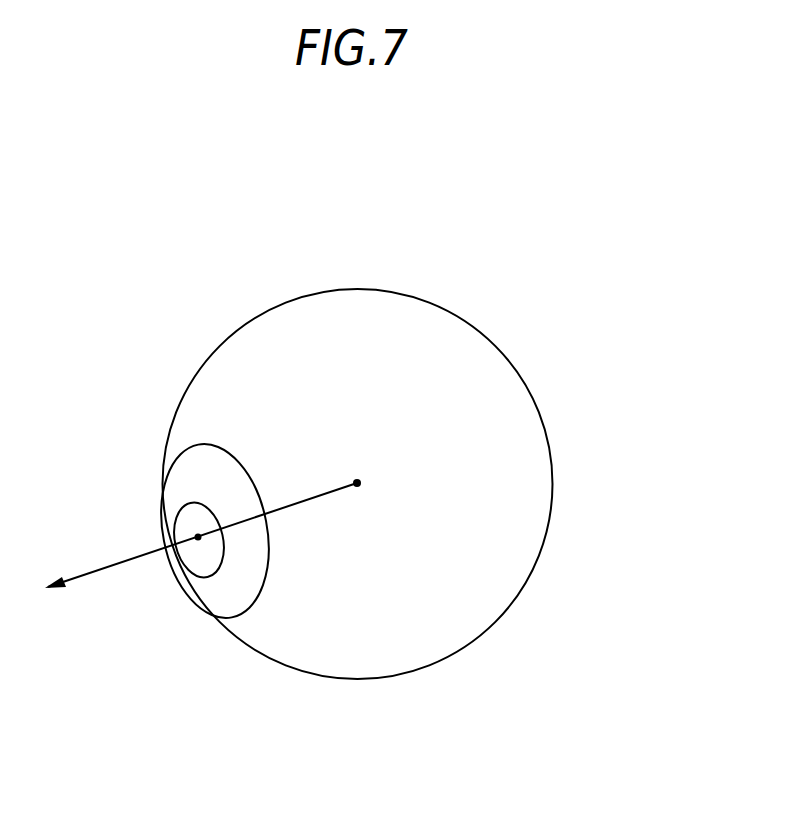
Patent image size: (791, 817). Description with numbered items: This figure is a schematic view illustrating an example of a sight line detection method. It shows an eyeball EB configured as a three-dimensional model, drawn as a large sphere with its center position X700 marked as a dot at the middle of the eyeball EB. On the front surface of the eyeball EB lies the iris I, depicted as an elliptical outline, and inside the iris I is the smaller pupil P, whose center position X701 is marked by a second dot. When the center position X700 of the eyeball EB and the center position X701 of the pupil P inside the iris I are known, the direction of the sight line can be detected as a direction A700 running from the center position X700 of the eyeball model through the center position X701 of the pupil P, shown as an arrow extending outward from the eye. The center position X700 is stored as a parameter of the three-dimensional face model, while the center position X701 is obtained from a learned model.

The eyeball EB is at (517, 295).
The center position of the eyeball X700 is at (357, 483).
The iris I is at (188, 444).
The pupil P is at (209, 500).
The center position of the pupil X701 is at (198, 538).
The direction of the sight line A700 is at (108, 567).